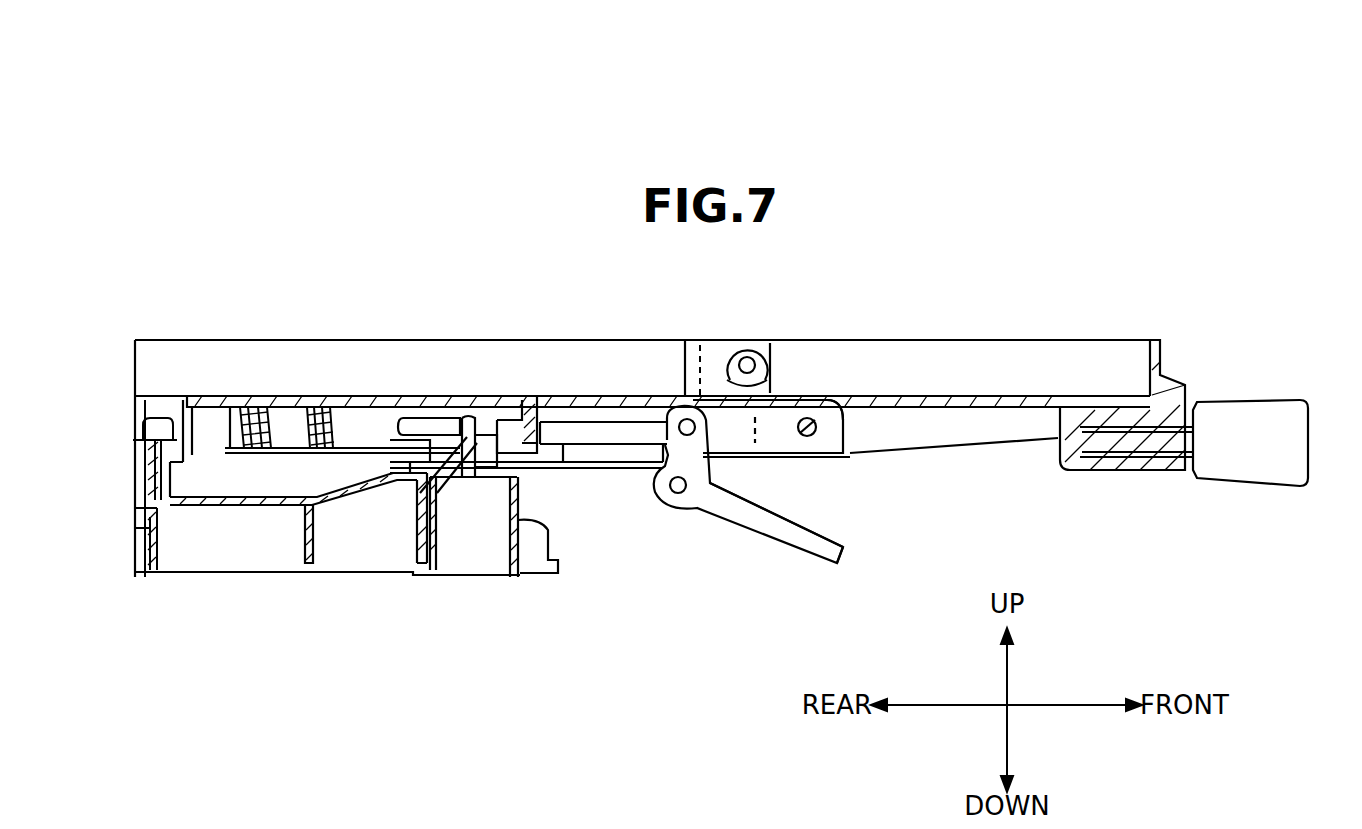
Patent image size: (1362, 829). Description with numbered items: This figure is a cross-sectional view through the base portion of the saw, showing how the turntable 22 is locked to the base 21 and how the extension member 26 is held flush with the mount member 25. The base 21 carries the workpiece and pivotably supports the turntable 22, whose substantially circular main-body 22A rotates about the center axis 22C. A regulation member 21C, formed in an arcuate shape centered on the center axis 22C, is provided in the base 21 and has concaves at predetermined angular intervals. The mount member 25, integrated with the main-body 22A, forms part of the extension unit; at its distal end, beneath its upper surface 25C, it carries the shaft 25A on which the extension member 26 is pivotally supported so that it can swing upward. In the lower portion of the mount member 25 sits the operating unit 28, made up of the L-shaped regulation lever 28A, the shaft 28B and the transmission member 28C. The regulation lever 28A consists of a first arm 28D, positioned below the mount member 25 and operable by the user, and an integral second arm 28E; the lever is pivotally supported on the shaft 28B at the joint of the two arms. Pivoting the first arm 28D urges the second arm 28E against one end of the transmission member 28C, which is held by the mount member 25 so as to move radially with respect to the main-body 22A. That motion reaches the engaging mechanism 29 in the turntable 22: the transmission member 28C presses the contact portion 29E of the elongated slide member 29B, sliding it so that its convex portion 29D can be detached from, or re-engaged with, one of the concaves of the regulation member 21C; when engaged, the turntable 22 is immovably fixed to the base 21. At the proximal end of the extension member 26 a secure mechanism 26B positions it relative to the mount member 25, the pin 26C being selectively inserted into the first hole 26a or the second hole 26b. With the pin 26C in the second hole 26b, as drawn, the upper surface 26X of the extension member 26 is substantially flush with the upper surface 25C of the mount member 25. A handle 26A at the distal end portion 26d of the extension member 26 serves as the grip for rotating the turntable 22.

The base 21 is at (365, 497).
The regulation member 21C is at (490, 430).
The turntable 22 is at (393, 340).
The main-body 22A is at (252, 345).
The center axis 22C is at (135, 465).
The mount member 25 is at (508, 350).
The shaft 25A is at (750, 355).
The upper surface of mount member 25C is at (720, 340).
The extension member 26 is at (983, 357).
The handle 26A is at (1250, 467).
The secure mechanism 26B is at (782, 438).
The pin 26C is at (832, 453).
The upper surface of extension member 26X is at (1053, 343).
The first hole 26a is at (692, 345).
The second hole 26b is at (825, 403).
The distal end portion 26d is at (1153, 470).
The operating unit 28 is at (720, 513).
The regulation lever 28A is at (693, 510).
The shaft 28B is at (675, 497).
The transmission member 28C is at (603, 428).
The first arm 28D is at (813, 553).
The second arm 28E is at (655, 468).
The engaging mechanism 29 is at (350, 428).
The slide member 29B is at (365, 427).
The convex portion 29D is at (540, 403).
The contact portion 29E is at (547, 440).